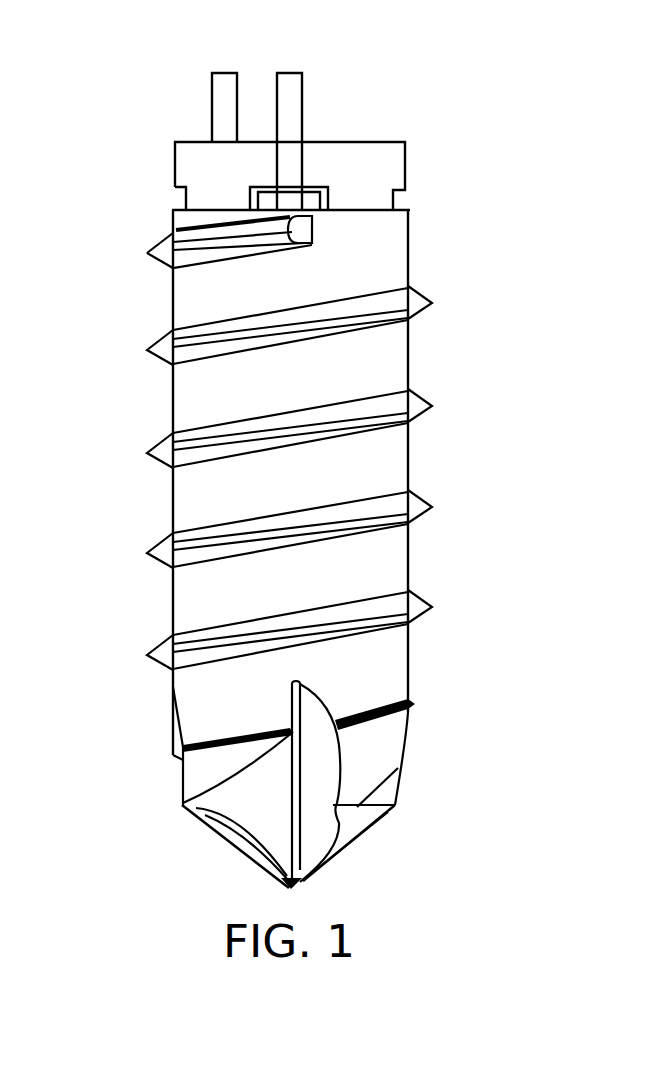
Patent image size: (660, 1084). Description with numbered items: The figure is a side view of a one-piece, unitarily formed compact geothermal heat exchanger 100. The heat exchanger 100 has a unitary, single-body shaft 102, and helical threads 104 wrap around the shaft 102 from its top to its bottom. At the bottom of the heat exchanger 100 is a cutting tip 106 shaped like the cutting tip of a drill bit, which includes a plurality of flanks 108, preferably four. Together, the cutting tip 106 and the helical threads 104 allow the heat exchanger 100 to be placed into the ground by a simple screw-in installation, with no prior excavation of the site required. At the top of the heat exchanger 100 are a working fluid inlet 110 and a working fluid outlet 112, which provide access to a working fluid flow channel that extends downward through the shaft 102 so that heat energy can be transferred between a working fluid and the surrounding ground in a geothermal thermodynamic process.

The geothermal heat exchanger 100 is at (424, 270).
The shaft 102 is at (383, 472).
The helical threads 104 is at (420, 405).
The cutting tip 106 is at (348, 870).
The flanks 108 is at (228, 828).
The working fluid inlet 110 is at (225, 105).
The working fluid outlet 112 is at (292, 105).